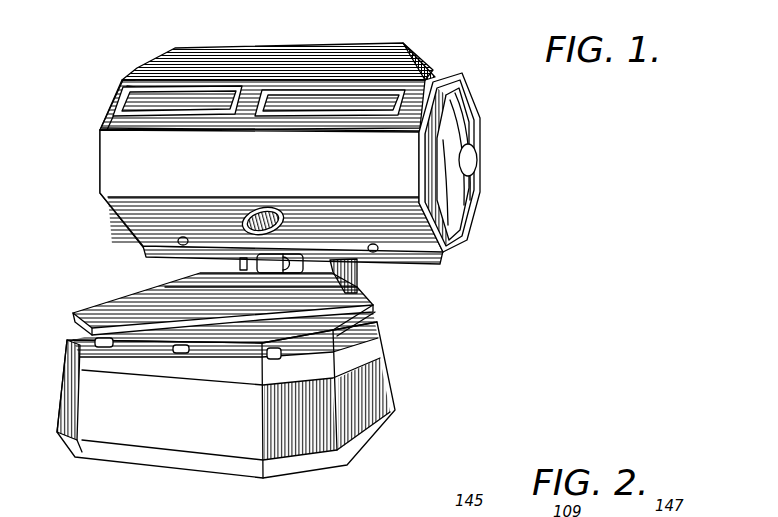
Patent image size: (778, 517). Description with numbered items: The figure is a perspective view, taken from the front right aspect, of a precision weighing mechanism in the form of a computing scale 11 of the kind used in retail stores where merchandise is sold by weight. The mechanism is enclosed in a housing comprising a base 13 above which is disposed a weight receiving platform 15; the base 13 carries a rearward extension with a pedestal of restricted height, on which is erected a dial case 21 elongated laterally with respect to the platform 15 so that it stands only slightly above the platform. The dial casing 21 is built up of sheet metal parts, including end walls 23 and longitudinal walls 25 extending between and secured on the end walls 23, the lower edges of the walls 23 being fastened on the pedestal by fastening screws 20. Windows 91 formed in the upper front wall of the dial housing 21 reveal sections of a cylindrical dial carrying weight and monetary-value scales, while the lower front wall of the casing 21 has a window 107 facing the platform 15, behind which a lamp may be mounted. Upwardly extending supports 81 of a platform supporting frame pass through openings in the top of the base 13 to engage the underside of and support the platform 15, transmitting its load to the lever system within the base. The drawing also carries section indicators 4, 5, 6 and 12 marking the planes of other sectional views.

The computing scale 11 is at (100, 87).
The base 13 is at (377, 360).
The weight receiving platform 15 is at (122, 303).
The fastening screws 20 is at (181, 246).
The dial case 21 is at (458, 76).
The end walls 23 is at (452, 210).
The longitudinal walls 25 is at (124, 182).
The supports 81 is at (94, 342).
The windows 91 is at (138, 88).
The window 107 is at (285, 222).
The section line 4- 4 is at (96, 160).
The section line 5- 5 is at (290, 30).
The section line 6- 6 is at (204, 32).
The section line 12- 12 is at (272, 193).